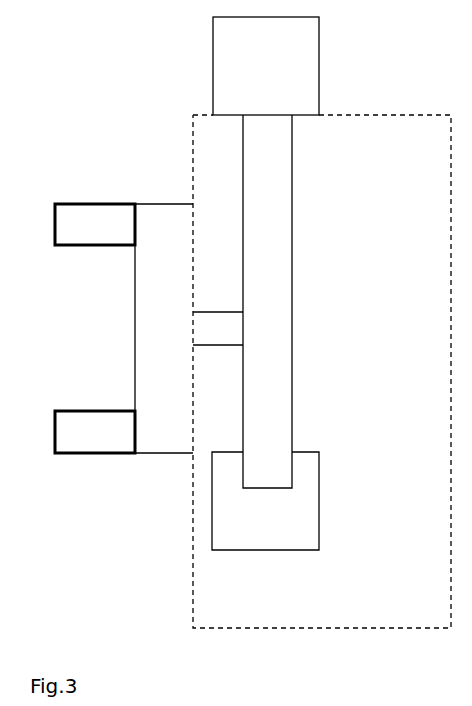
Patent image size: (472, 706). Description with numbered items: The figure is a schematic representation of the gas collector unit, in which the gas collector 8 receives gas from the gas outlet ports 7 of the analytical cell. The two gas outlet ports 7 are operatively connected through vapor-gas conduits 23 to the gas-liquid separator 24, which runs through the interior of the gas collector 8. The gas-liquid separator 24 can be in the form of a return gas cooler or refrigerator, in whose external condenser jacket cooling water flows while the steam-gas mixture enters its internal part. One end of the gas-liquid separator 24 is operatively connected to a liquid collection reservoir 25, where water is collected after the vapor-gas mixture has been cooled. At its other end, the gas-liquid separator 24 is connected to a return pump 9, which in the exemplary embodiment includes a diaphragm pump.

The gas outlet ports 7 is at (95, 328).
The gas collector 8 is at (322, 371).
The return pump 9 is at (266, 66).
The vapor-gas conduits 23 is at (189, 328).
The gas-liquid separator 24 is at (267, 301).
The liquid collection reservoir 25 is at (265, 501).